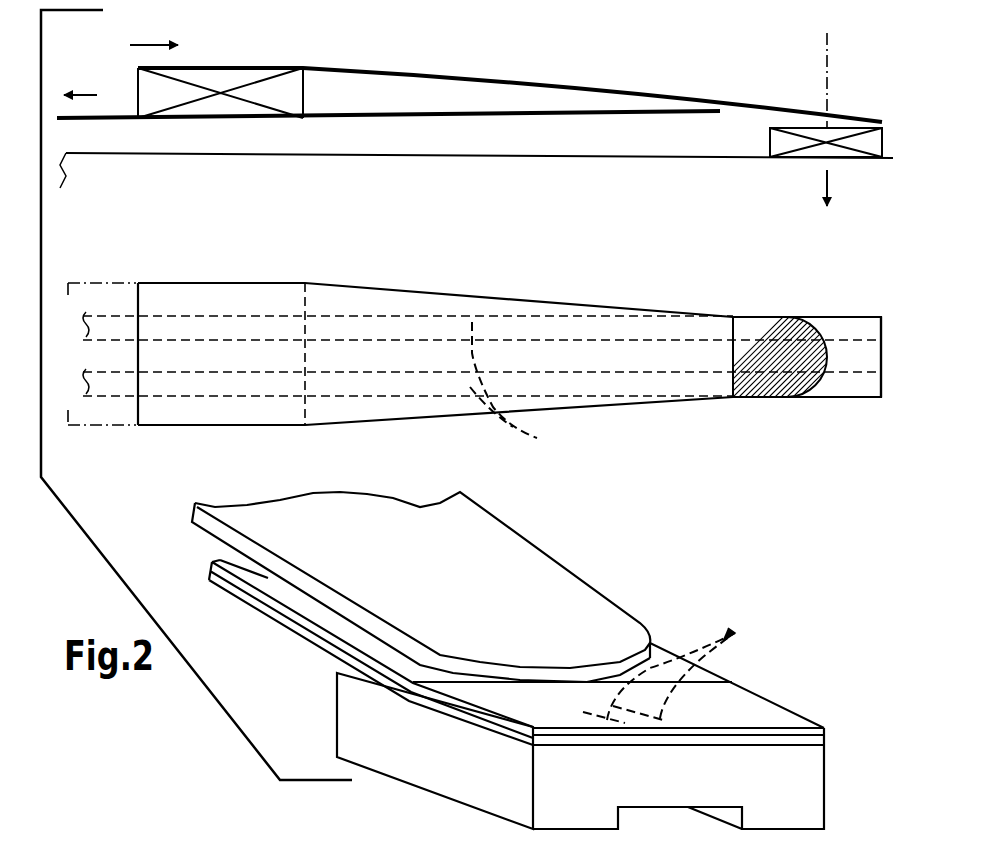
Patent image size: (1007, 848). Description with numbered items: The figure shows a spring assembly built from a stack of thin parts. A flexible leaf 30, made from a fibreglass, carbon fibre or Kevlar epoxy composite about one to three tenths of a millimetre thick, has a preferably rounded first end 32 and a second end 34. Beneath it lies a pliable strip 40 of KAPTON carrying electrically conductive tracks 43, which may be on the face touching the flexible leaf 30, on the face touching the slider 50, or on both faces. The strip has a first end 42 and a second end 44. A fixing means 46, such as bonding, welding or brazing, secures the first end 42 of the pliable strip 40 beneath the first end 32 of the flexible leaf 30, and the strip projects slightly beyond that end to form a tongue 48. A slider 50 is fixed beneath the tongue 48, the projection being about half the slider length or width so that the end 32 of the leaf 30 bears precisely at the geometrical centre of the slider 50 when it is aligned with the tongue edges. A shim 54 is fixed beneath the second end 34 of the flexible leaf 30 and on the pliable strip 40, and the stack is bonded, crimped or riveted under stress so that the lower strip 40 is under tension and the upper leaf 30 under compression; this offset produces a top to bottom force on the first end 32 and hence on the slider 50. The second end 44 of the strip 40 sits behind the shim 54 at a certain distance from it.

The flexible leaf 30 is at (495, 75).
The first end 32 is at (825, 115).
The second end 34 is at (138, 68).
The pliable strip 40 is at (552, 118).
The first end 42 is at (881, 392).
The electrically conductive tracks 43 is at (613, 522).
The second end 44 is at (80, 120).
The fixing means 46 is at (787, 325).
The tongue 48 is at (853, 325).
The slider 50 is at (813, 785).
The shim 54 is at (243, 82).